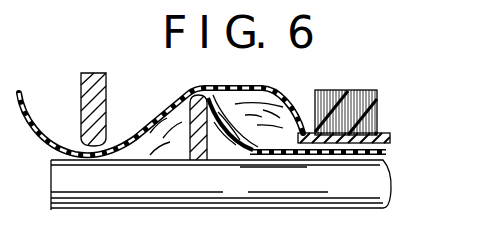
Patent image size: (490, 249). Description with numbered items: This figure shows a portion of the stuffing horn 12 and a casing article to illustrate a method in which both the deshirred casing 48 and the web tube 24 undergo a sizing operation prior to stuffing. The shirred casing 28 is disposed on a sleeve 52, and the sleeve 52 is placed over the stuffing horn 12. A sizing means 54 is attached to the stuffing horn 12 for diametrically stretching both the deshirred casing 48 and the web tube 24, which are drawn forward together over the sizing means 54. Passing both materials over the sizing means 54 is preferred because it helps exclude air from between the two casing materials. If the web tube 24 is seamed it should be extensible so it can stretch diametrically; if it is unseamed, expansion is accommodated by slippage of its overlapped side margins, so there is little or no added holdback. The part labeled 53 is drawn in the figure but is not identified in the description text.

The base 12 is at (113, 210).
The flexible membrane sheet 24 is at (386, 153).
The key block 28 is at (335, 90).
The dome 48 is at (234, 88).
The spacer strip 52 is at (390, 140).
The base plate 53 is at (221, 184).
The pin 54 is at (190, 136).